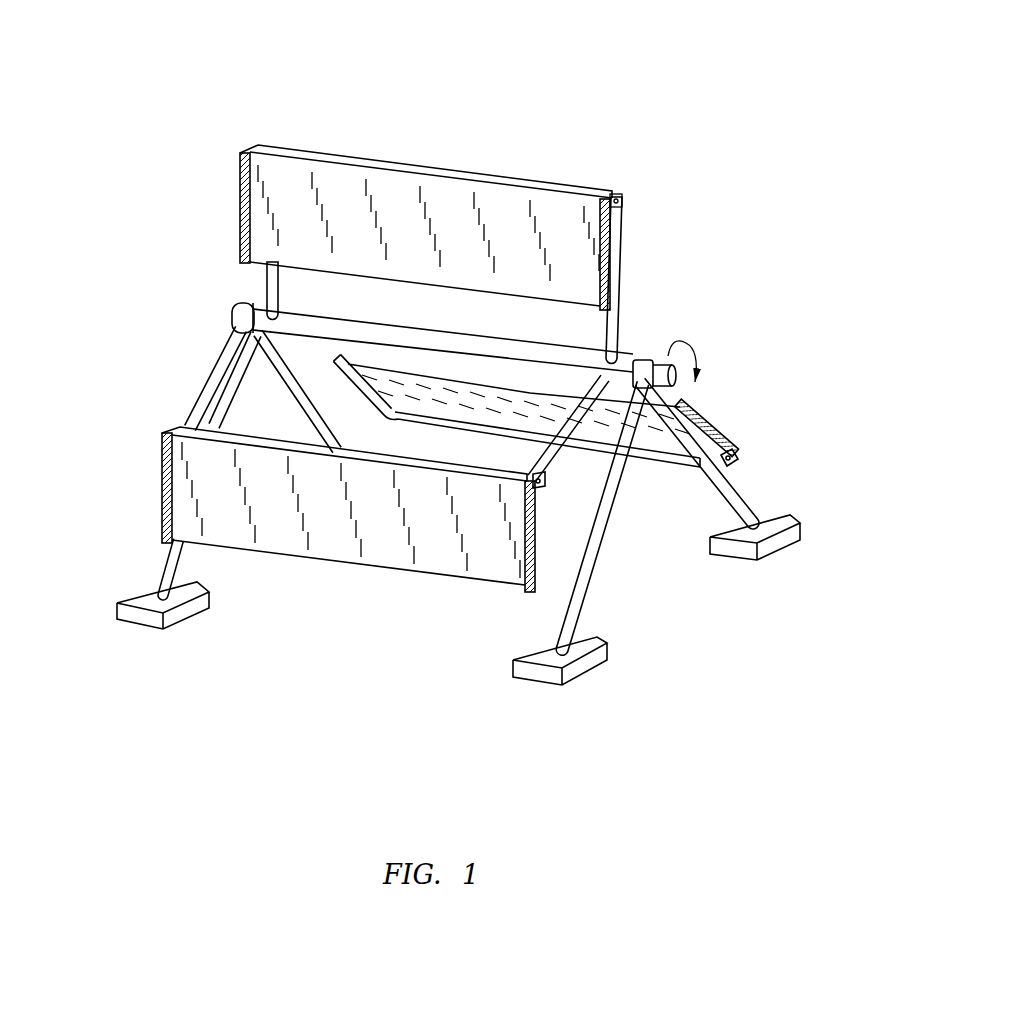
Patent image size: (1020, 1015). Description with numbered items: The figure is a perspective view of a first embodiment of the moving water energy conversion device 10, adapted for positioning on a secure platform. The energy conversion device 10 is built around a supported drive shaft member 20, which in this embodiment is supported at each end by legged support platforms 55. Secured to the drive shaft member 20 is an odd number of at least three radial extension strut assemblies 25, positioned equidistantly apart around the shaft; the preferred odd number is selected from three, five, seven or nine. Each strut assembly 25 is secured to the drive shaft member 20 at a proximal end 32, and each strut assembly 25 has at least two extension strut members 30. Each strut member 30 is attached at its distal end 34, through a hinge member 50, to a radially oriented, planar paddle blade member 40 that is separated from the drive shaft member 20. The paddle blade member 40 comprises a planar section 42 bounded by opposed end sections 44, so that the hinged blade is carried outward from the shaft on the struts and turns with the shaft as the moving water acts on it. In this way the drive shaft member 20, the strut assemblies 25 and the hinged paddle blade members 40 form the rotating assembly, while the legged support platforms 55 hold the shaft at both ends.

The moving water energy conversion device 10 is at (450, 342).
The drive shaft member 20 is at (474, 339).
The radial extension strut assembly 25 is at (422, 263).
The extension strut member 30 is at (430, 280).
The proximal end of strut member 32 is at (438, 318).
The distal end of strut member 34 is at (660, 184).
The planar paddle blade member 40 is at (451, 376).
The planar section of blade member 42 is at (436, 358).
The opposed end sections of blade member 44 is at (443, 391).
The hinge member 50 is at (677, 357).
The legged support platform 55 is at (442, 505).